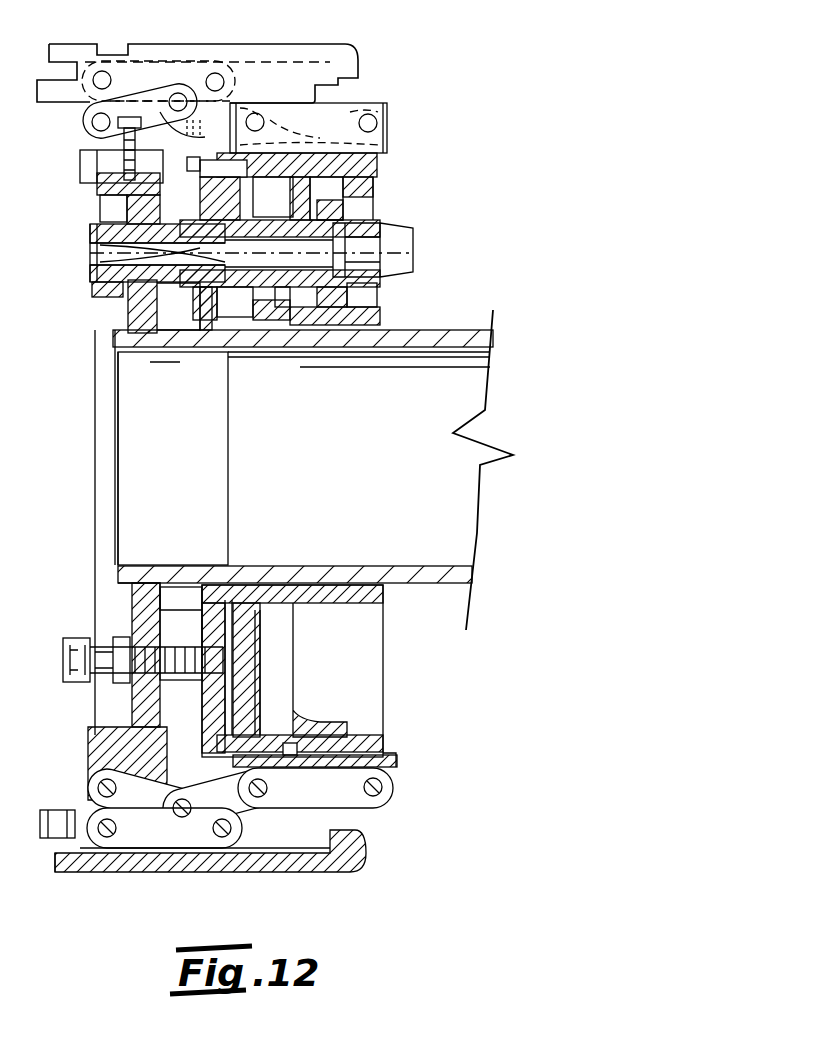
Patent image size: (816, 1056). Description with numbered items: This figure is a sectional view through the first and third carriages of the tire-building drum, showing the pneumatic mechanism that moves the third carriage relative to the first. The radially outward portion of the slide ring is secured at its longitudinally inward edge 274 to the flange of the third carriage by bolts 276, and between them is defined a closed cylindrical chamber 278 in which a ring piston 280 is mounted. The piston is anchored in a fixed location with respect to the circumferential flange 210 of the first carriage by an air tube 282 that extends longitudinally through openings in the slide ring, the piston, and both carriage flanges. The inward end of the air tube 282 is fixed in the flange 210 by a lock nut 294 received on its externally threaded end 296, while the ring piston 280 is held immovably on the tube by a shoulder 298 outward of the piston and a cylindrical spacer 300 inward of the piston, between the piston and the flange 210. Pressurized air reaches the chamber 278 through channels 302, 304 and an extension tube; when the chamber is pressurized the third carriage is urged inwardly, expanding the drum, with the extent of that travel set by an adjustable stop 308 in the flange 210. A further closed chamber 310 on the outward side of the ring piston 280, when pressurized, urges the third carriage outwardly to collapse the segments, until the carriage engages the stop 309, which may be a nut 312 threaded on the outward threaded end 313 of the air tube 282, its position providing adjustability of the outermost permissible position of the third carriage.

The longitudinally inward edge 274 is at (225, 220).
The bolts 276 is at (113, 153).
The circumferential flange 210 is at (110, 173).
The channel 302 is at (135, 192).
The cylindrical spacer 300 is at (115, 243).
The channel 304 is at (108, 268).
The externally threaded end 296 is at (108, 277).
The lock nut 294 is at (118, 290).
The stop 309 is at (303, 217).
The nut 312 is at (343, 222).
The air tube 282 is at (392, 235).
The outward threaded end 313 is at (360, 283).
The shoulder 298 is at (254, 220).
The ring piston 280 is at (282, 308).
The cylindrical closed chamber 310 is at (280, 306).
The closed cylindrical chamber 278 is at (223, 610).
The adjustable stop 308 is at (177, 652).